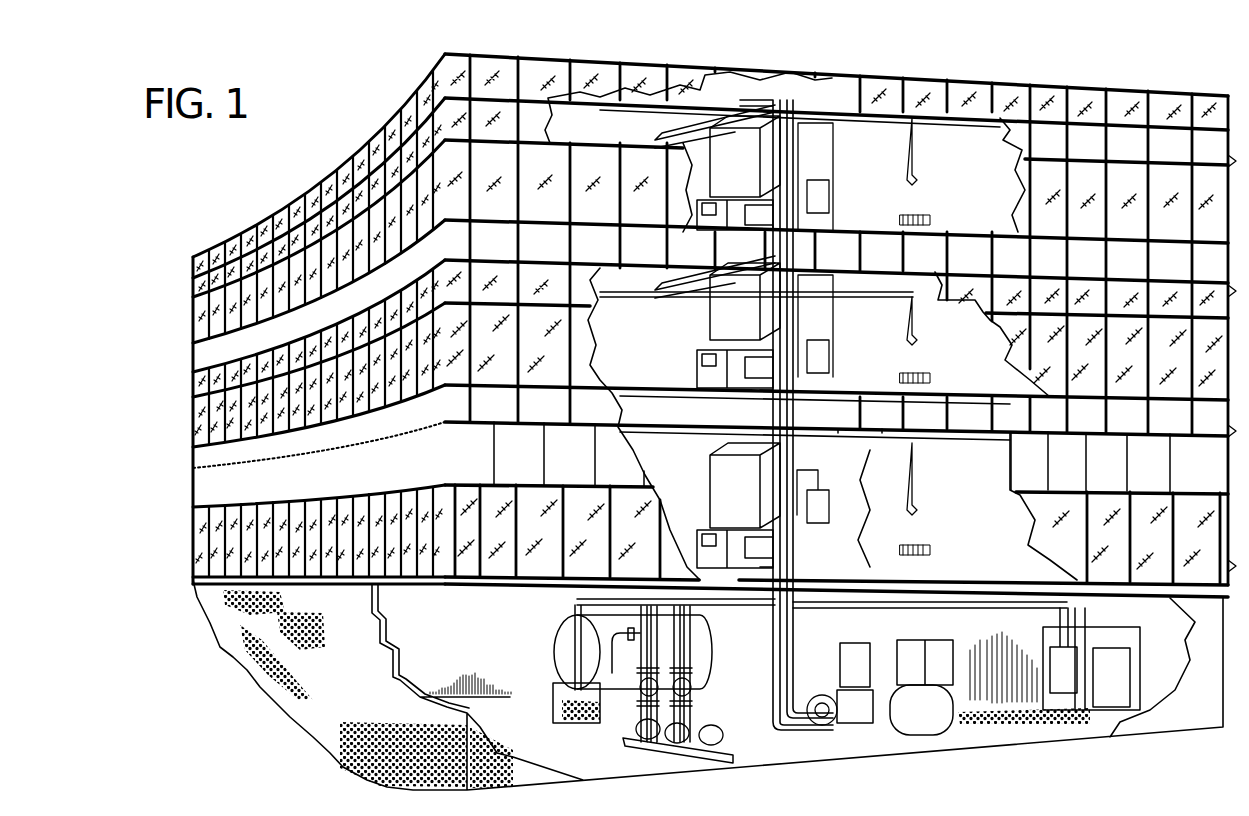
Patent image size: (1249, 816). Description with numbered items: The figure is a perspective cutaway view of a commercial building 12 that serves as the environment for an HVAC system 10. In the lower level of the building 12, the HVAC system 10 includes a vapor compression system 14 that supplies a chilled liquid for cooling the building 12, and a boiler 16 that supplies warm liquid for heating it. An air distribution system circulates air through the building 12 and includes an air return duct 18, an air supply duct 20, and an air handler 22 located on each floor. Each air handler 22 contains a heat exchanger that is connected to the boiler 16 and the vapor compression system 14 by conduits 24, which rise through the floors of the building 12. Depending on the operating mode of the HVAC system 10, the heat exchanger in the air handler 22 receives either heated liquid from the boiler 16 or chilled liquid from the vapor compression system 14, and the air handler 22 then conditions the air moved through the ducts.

The HVAC system 10 is at (1000, 762).
The building 12 is at (1090, 92).
The vapor compression system 14 is at (903, 708).
The boiler 16 is at (555, 642).
The air return duct 18 is at (693, 385).
The air supply duct 20 is at (752, 118).
The air handler 22 is at (740, 350).
The conduits 24 is at (790, 565).